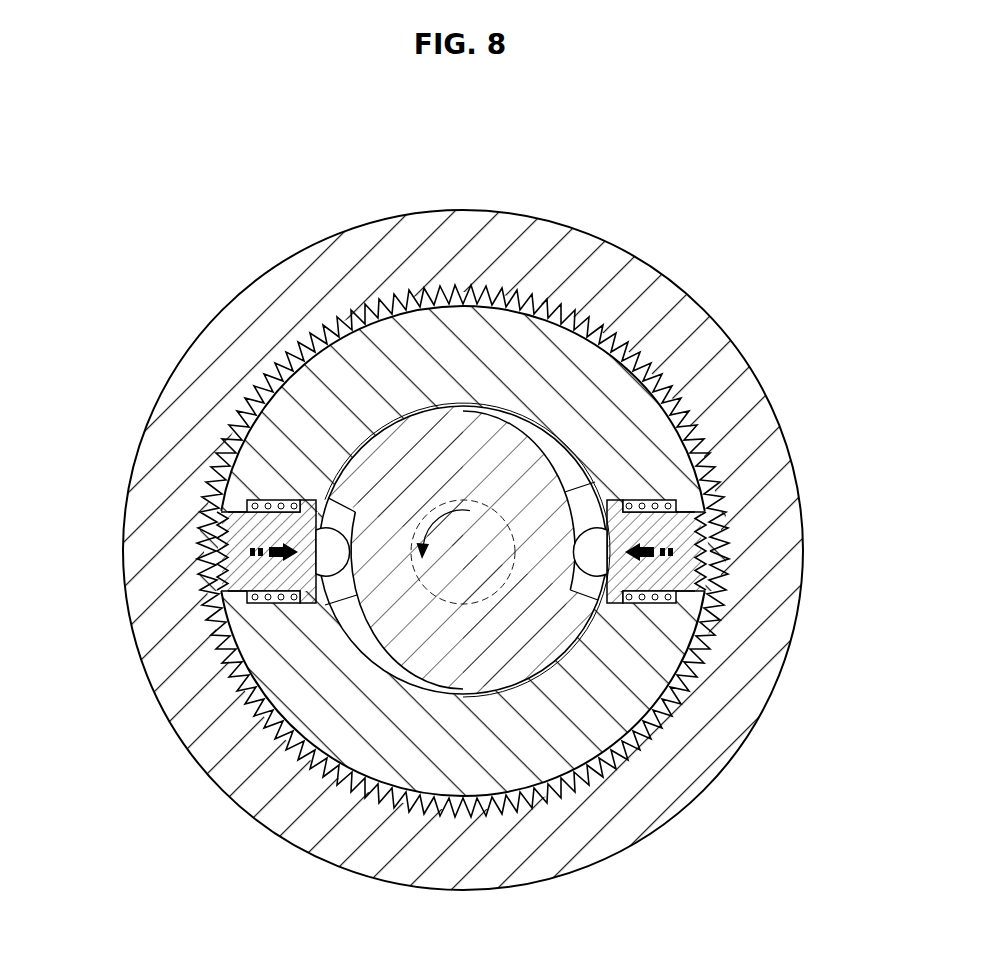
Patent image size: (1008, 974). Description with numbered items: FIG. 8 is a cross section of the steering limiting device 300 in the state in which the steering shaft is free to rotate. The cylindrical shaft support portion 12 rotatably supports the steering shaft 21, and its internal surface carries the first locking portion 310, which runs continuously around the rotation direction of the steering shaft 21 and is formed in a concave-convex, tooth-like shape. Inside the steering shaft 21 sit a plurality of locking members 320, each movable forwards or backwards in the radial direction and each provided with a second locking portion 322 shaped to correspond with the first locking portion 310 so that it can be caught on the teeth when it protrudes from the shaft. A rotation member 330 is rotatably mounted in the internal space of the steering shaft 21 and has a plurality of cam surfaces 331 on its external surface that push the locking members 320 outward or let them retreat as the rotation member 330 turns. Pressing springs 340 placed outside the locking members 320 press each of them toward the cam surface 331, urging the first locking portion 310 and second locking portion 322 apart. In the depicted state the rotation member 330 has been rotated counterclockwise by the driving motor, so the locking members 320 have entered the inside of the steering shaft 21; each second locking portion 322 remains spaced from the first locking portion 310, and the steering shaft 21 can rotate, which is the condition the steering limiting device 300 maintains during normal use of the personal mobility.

The cylindrical shaft support portion 12 is at (223, 338).
The steering shaft 21 is at (628, 745).
The steering limiting device 300 is at (338, 294).
The first locking portion 310 is at (488, 292).
The locking member 320 is at (224, 520).
The second locking portion 322 is at (222, 560).
The rotation member 330 is at (452, 640).
The cam surface 331 is at (600, 478).
The pressing spring 340 is at (266, 500).